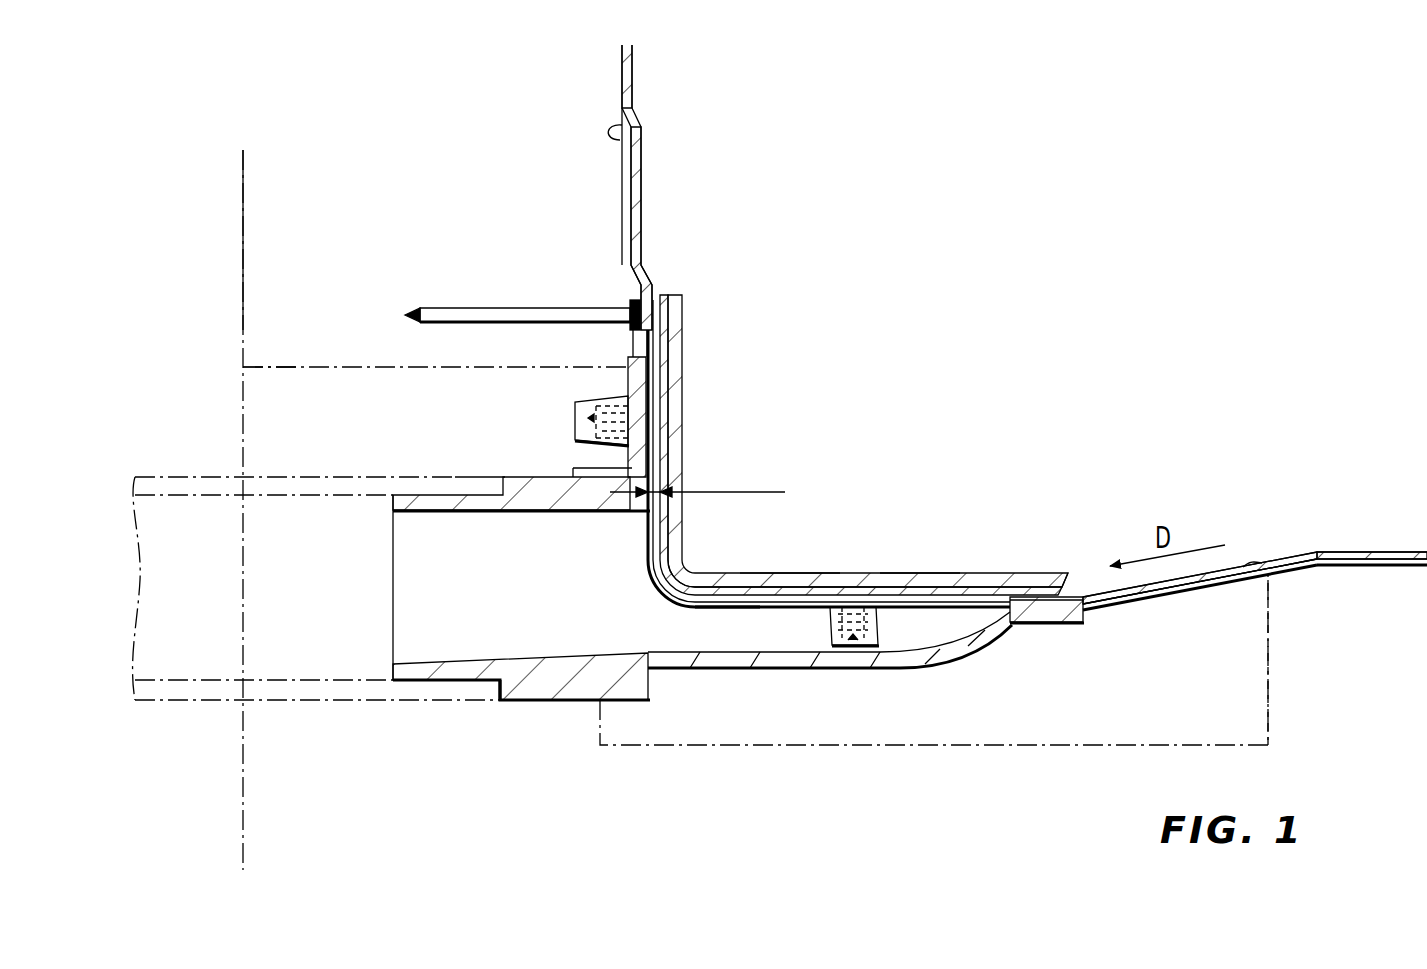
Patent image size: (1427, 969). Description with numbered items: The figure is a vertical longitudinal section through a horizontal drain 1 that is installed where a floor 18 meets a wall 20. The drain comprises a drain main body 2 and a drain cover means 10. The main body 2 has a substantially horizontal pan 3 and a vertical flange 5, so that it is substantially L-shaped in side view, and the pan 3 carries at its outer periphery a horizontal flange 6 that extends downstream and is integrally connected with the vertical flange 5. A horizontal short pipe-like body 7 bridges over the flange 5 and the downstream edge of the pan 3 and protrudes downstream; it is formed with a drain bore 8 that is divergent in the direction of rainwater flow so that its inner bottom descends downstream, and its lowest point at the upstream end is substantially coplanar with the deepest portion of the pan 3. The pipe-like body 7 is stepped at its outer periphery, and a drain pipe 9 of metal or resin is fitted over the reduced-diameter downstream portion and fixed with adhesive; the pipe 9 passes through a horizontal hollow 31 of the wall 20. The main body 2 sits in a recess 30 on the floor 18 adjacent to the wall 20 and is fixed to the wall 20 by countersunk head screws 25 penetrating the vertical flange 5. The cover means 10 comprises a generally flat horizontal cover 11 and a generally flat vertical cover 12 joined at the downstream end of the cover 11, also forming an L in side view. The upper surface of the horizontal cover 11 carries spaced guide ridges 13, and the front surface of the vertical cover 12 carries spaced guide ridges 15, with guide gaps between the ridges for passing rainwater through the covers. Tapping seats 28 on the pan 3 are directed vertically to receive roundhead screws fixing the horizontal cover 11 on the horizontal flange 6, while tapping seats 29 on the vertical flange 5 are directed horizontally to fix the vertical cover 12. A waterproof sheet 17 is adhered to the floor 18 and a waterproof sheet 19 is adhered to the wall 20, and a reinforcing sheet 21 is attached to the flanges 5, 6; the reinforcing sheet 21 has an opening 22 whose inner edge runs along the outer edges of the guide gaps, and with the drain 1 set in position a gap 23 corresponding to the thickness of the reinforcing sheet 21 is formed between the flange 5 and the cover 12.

The horizontal drain 1 is at (815, 462).
The drain main body 2 is at (712, 685).
The horizontal pan 3 is at (768, 672).
The vertical flange 5 is at (632, 370).
The horizontal flange 6 is at (1073, 624).
The pipe-like body 7 is at (515, 690).
The drain bore 8 is at (440, 622).
The drain pipe 9 is at (196, 702).
The drain cover means 10 is at (820, 566).
The horizontal cover 11 is at (917, 572).
The vertical cover 12 is at (683, 432).
The guide ridges 13 is at (975, 572).
The guide ridges 15 is at (676, 322).
The waterproof sheet 17 is at (1302, 550).
The floor 18 is at (1355, 582).
The waterproof sheet 19 is at (633, 73).
The wall 20 is at (273, 262).
The reinforcing sheet 21 is at (633, 122).
The opening 22 is at (725, 606).
The gap 23 is at (697, 478).
The countersunk head screws 25 is at (470, 305).
The tapping seats 28 is at (830, 648).
The tapping seats 29 is at (572, 422).
The recess 30 is at (1270, 722).
The horizontal hollow 31 is at (275, 410).